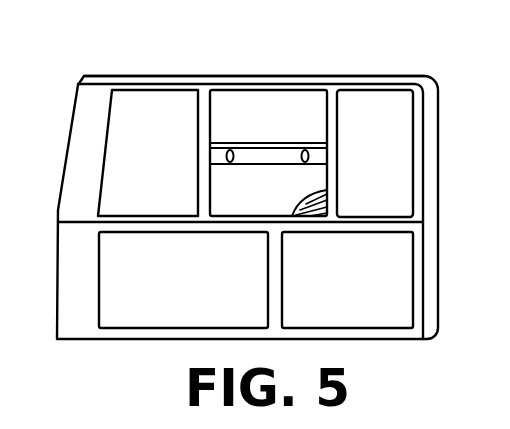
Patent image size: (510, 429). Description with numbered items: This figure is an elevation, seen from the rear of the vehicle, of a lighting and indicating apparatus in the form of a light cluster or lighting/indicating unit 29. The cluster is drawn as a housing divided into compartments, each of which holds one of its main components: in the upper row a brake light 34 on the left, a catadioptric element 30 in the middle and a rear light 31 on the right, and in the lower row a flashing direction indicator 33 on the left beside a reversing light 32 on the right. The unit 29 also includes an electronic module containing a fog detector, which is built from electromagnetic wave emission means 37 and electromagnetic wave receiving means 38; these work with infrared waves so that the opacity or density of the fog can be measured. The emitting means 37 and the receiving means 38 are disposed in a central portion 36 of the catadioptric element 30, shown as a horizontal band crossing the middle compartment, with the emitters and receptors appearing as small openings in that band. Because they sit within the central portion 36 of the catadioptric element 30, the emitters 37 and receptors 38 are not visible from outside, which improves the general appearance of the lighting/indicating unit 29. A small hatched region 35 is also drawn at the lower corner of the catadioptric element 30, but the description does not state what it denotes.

The lighting/indicating unit 29 is at (197, 74).
The catadioptric element 30 is at (300, 99).
The rear light 31 is at (396, 150).
The reversing light 32 is at (360, 303).
The flashing direction indicator 33 is at (197, 302).
The brake light 34 is at (165, 170).
The hatched spring element 35 is at (330, 199).
The central portion 36 is at (247, 157).
The electromagnetic wave emission means 37 is at (327, 123).
The electromagnetic wave receiving means 38 is at (234, 163).